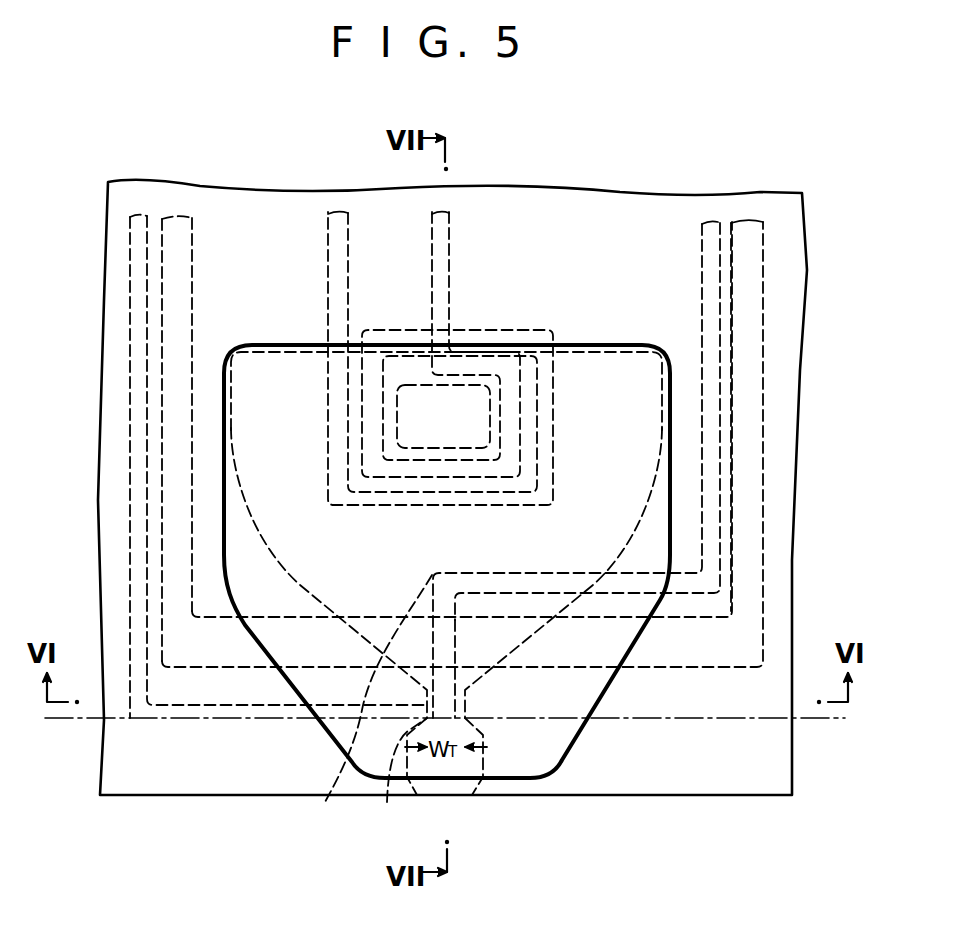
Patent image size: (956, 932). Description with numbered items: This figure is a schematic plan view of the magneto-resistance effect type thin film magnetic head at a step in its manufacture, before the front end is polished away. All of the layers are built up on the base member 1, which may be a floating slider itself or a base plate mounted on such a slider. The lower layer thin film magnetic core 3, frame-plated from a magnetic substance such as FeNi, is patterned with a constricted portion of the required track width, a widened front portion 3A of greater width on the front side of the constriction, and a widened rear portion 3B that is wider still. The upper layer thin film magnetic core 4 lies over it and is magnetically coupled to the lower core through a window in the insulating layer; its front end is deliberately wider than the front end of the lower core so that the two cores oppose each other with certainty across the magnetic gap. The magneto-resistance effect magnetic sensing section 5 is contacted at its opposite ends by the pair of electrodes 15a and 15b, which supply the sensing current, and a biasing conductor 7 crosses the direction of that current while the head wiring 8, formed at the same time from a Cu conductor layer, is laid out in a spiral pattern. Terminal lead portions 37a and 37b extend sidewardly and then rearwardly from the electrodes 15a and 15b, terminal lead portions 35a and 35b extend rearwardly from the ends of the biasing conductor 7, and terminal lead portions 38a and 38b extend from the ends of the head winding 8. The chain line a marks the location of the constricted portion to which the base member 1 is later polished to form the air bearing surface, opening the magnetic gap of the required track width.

The base member 1 is at (793, 562).
The lower layer thin film magnetic core 3 is at (540, 632).
The widened front portion 3A is at (483, 755).
The widened rear portion 3B is at (668, 428).
The upper layer thin film magnetic core 4 is at (650, 637).
The magneto-resistance effect magnetic sensing section 5 is at (458, 632).
The biasing conductor 7 is at (368, 616).
The head wiring 8 is at (478, 330).
The electrode 15a is at (399, 776).
The electrode 15b is at (366, 704).
The terminal lead portion 35a is at (135, 215).
The terminal lead portion 35b is at (747, 218).
The terminal lead portion 37a is at (185, 215).
The terminal lead portion 37b is at (708, 220).
The terminal lead portion 38a is at (338, 212).
The terminal lead portion 38b is at (446, 212).
The chain line a is at (812, 720).